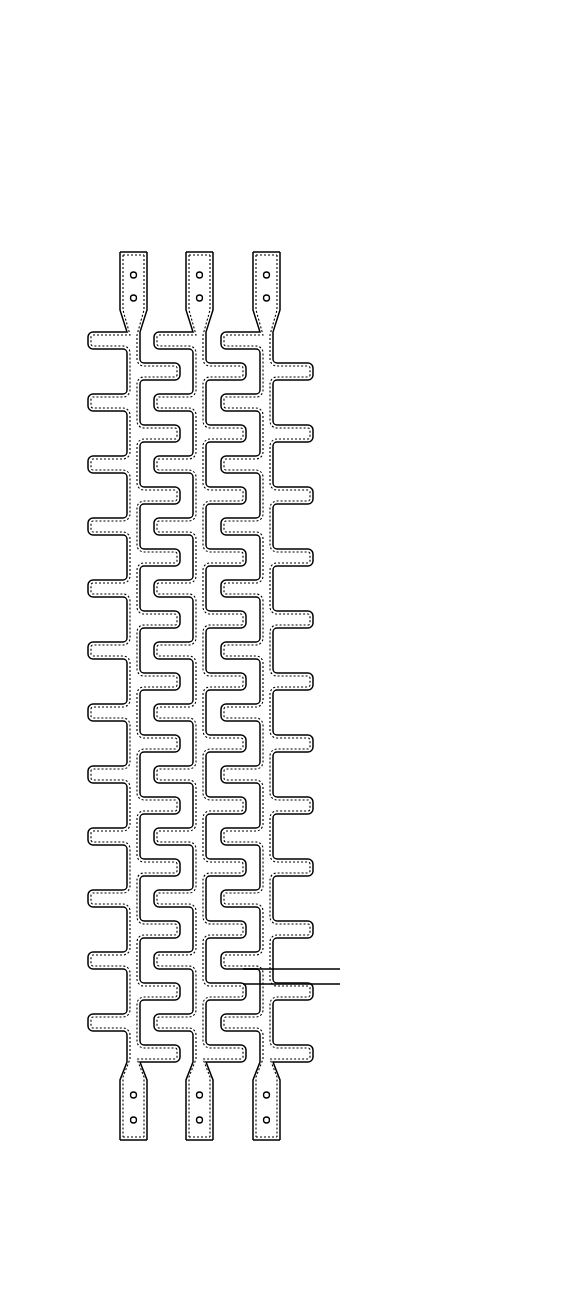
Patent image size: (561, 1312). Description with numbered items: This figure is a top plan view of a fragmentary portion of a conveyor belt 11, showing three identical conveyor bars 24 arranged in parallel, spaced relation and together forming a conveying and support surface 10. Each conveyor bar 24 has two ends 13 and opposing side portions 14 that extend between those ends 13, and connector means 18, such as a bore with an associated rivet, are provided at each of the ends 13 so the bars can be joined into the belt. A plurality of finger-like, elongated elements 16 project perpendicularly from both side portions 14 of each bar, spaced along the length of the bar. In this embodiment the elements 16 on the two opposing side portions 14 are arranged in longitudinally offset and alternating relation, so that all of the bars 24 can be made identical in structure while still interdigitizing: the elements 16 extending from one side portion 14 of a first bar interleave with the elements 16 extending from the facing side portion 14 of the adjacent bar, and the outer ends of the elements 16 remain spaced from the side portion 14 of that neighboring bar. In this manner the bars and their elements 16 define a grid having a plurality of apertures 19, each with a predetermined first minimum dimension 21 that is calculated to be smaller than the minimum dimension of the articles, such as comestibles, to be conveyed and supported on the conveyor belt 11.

The conveying and support surface 10 is at (287, 781).
The conveyor belt 11 is at (245, 84).
The ends 13 is at (120, 267).
The side portions 14 is at (275, 407).
The elements 16 is at (87, 525).
The connector means 18 is at (268, 274).
The aperture 19 is at (255, 735).
The first minimum dimension 21 is at (170, 354).
The conveyor bars 24 is at (285, 523).